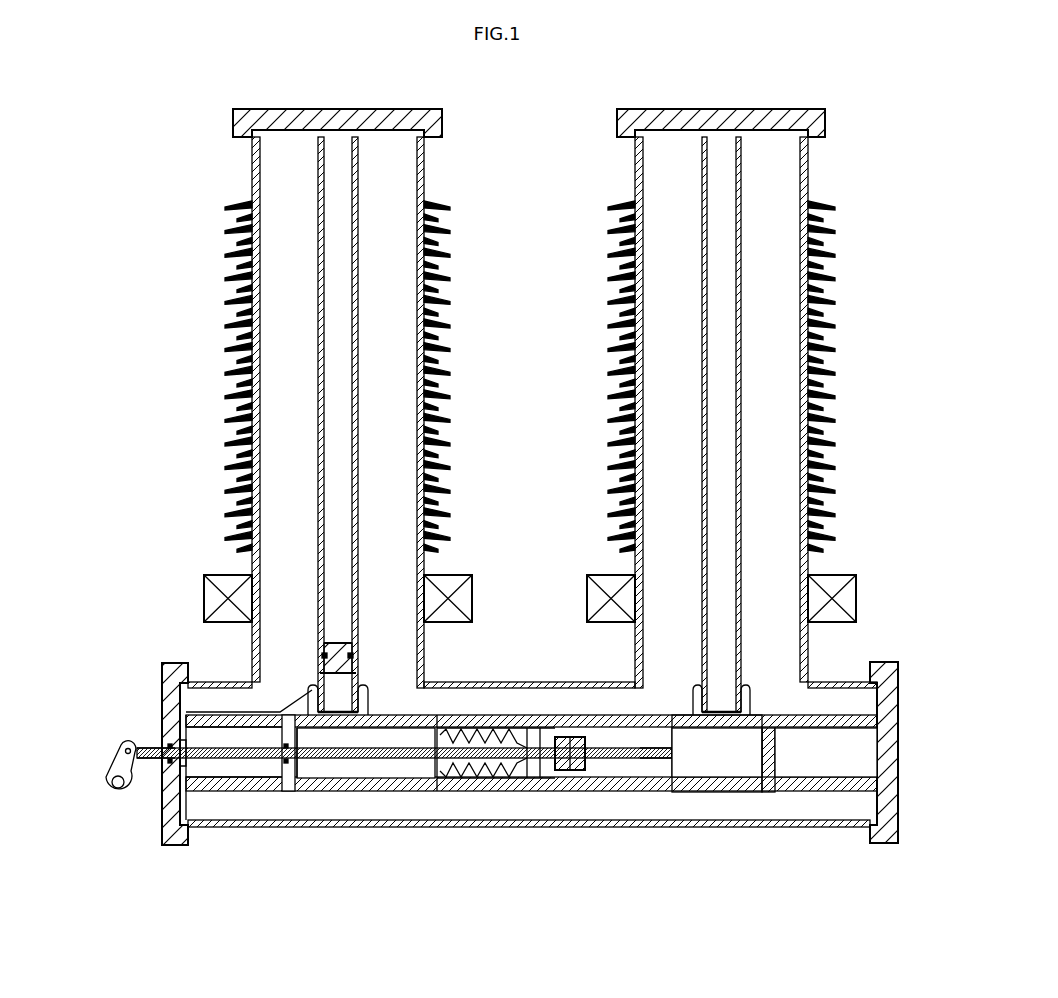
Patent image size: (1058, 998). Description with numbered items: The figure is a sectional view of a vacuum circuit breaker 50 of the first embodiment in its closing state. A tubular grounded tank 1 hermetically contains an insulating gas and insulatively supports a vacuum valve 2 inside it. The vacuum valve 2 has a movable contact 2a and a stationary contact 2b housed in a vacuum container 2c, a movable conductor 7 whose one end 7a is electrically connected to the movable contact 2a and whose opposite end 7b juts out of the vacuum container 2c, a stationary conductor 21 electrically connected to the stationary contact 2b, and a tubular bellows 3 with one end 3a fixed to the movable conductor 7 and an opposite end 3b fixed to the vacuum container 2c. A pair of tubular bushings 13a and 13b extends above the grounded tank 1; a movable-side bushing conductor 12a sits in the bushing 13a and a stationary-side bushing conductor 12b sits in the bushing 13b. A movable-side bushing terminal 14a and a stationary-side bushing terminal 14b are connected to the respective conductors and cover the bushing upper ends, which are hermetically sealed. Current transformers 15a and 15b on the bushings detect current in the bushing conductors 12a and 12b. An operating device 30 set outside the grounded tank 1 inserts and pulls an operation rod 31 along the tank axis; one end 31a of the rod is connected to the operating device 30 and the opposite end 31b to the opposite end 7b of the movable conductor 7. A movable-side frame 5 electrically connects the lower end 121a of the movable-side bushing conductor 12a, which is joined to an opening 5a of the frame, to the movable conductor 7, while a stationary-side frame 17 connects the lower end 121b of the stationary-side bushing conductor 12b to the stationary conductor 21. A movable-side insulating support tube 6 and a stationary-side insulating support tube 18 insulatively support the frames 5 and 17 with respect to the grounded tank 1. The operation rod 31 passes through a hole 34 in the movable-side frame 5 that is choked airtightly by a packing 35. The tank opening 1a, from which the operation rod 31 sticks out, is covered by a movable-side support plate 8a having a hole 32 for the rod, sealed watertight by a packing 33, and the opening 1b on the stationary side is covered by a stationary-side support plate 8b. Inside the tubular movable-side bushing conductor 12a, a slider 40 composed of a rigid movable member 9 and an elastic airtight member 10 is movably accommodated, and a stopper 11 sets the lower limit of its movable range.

The grounded tank 1 is at (215, 828).
The opening 1a is at (188, 702).
The opening 1b is at (877, 702).
The vacuum valve 2 is at (592, 716).
The movable contact 2a is at (560, 772).
The stationary contact 2b is at (577, 772).
The vacuum container 2c is at (530, 828).
The bellows 3 is at (490, 735).
The one end of bellows 3a is at (518, 778).
The opposite end of bellows 3b is at (456, 778).
The movable-side frame 5 is at (378, 791).
The opening of movable-side frame 5a is at (310, 703).
The movable-side insulating support tube 6 is at (266, 828).
The movable conductor 7 is at (527, 745).
The one end of movable conductor 7a is at (545, 742).
The opposite end of movable conductor 7b is at (420, 778).
The movable-side support plate 8a is at (170, 845).
The stationary-side support plate 8b is at (888, 845).
The movable member 9 is at (320, 653).
The airtight member 10 is at (322, 665).
The stopper 11 is at (312, 686).
The movable-side bushing conductor 12a is at (358, 155).
The stationary-side bushing conductor 12b is at (741, 155).
The bushing 13a is at (247, 205).
The bushing 13b is at (812, 205).
The movable-side bushing terminal 14a is at (233, 113).
The stationary-side bushing terminal 14b is at (825, 115).
The current transformer 15a is at (204, 583).
The current transformer 15b is at (840, 577).
The stationary-side frame 17 is at (727, 792).
The stationary-side insulating support tube 18 is at (835, 792).
The stationary conductor 21 is at (643, 792).
The operating device 30 is at (112, 790).
The operation rod 31 is at (333, 760).
The one end of operation rod 31a is at (125, 746).
The opposite end of operation rod 31b is at (396, 778).
The hole 32 is at (178, 742).
The packing 33 is at (170, 763).
The hole 34 is at (248, 822).
The packing 35 is at (286, 791).
The slider 40 is at (339, 636).
The vacuum circuit breaker 50 is at (855, 364).
The lower end of movable-side bushing conductor 121a is at (357, 672).
The lower end of stationary-side bushing conductor 121b is at (750, 690).